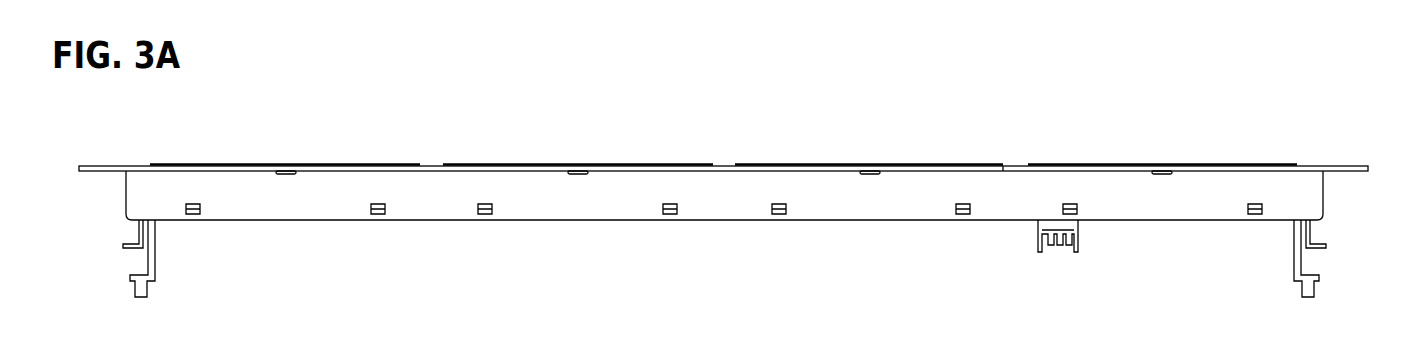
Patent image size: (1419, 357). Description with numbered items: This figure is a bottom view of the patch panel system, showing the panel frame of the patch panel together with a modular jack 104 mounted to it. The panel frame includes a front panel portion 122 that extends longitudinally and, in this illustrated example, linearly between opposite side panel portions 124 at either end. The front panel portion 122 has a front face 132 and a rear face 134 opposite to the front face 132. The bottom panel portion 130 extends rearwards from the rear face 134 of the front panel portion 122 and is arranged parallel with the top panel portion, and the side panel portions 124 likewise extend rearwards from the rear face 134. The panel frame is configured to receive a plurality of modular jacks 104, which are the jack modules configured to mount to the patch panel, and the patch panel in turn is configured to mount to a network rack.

The modular jack 104 is at (1073, 240).
The front panel portion 122 is at (723, 164).
The side panel portions 124 is at (138, 230).
The bottom panel portion 130 is at (870, 200).
The front face 132 is at (1016, 165).
The rear face 134 is at (1003, 174).